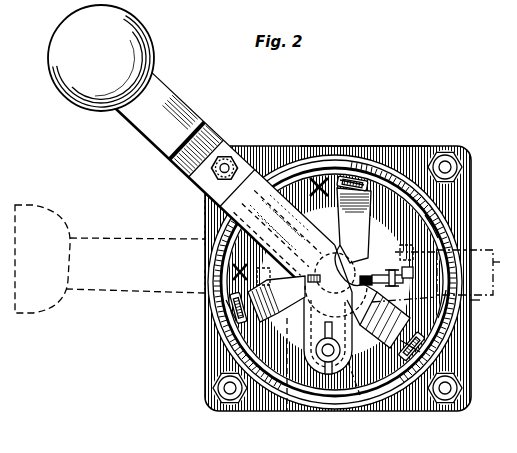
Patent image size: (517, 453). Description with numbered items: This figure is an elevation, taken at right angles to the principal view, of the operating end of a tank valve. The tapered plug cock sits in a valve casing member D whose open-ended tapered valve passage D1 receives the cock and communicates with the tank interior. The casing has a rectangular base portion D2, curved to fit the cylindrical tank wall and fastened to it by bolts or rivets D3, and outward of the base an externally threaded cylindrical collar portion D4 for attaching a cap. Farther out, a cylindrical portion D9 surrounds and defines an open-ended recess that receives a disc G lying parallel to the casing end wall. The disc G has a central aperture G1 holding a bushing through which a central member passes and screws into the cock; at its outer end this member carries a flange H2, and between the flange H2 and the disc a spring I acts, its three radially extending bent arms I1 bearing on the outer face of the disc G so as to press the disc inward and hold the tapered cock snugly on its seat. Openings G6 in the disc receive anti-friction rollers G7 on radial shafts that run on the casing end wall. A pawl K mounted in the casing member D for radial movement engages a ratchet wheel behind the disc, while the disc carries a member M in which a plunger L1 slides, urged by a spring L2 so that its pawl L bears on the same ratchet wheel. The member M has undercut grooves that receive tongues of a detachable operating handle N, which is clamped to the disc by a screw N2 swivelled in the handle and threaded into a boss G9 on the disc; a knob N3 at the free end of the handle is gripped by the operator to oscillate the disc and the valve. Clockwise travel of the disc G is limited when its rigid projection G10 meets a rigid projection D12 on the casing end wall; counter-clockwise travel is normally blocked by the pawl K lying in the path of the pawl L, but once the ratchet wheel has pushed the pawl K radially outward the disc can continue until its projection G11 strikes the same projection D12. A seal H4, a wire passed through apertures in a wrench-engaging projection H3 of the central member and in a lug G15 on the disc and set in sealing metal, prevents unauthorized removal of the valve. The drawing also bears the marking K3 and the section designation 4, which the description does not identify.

The knob N3 is at (143, 26).
The operating handle N is at (152, 138).
The screw N2 is at (326, 374).
The pawl L is at (262, 143).
The plunger L1 is at (212, 233).
The spring L2 is at (207, 208).
The member M is at (298, 158).
The valve casing member D is at (342, 142).
The valve passage D1 is at (505, 263).
The base portion D2 is at (364, 145).
The bolts or rivets D3 is at (441, 160).
The collar portion D4 is at (281, 162).
The cylindrical portion D9 is at (394, 178).
The rigid projection D12 is at (287, 411).
The disc G is at (303, 165).
The central aperture G1 is at (493, 305).
The openings G6 is at (339, 170).
The anti-friction rollers G7 is at (371, 182).
The boss G9 is at (360, 395).
The rigid projection G10 is at (433, 243).
The rigid projection G11 is at (210, 280).
The lug G15 is at (453, 304).
The flange H2 is at (352, 268).
The wrench engaging projection H3 is at (350, 252).
The seal H4 is at (452, 278).
The spring I is at (364, 268).
The bent arms I1 is at (371, 201).
The pawl K is at (290, 253).
The plug contact K3 is at (476, 272).
The section line 4- 4 is at (280, 231).